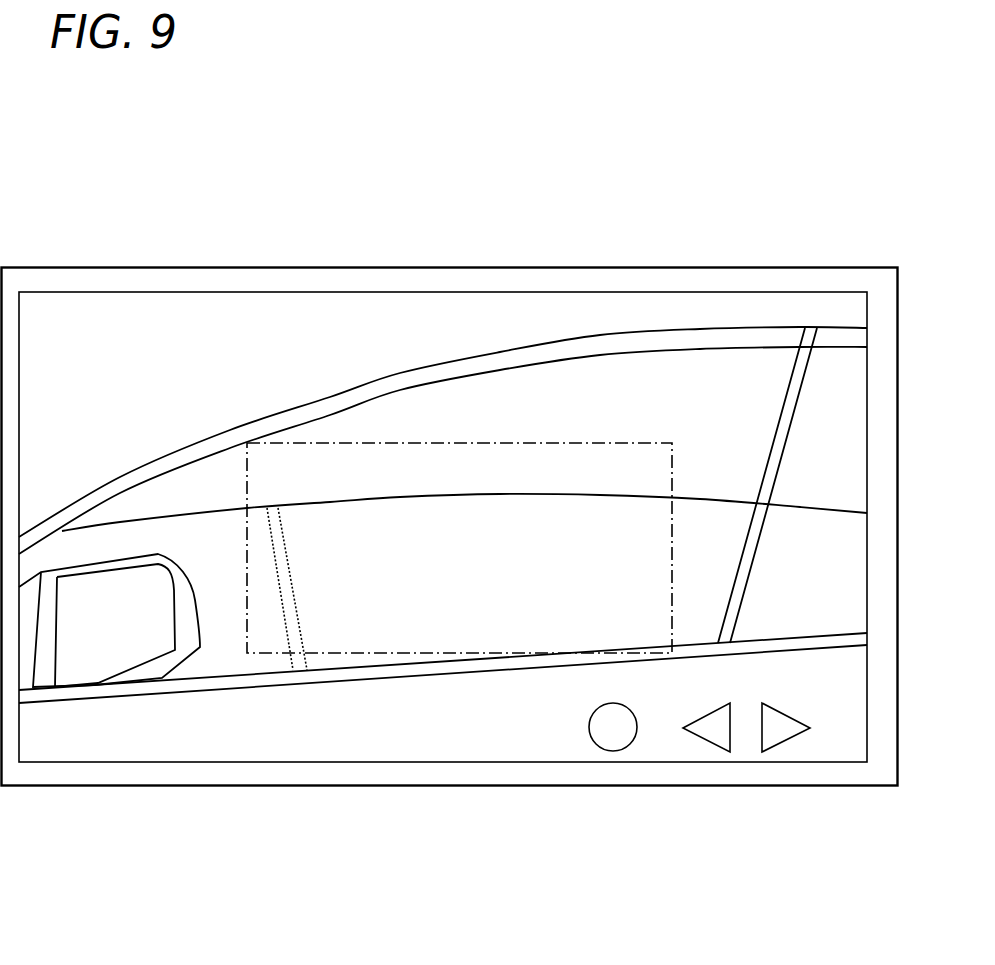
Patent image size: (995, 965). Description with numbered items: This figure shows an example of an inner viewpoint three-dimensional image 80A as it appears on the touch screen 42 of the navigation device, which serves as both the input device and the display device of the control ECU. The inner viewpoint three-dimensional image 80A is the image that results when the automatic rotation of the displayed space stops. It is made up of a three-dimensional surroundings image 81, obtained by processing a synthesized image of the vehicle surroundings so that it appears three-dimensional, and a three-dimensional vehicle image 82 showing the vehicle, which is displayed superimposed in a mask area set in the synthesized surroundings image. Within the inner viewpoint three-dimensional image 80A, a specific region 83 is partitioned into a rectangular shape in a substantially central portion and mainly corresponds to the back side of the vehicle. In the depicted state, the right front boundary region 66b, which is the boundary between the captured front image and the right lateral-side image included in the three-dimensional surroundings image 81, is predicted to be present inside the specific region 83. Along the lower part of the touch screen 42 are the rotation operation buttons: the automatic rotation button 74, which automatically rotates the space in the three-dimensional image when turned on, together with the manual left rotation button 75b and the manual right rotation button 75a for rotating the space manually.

The touch screen 42 is at (620, 267).
The inner viewpoint three-dimensional image 80A is at (260, 292).
The three-dimensional surroundings image 81 is at (397, 497).
The three-dimensional vehicle image 82 is at (832, 327).
The specific region 83 is at (373, 653).
The right front boundary region 66b is at (293, 632).
The automatic rotation button 74 is at (635, 737).
The manual left rotation button 75b is at (708, 740).
The manual right rotation button 75a is at (787, 740).